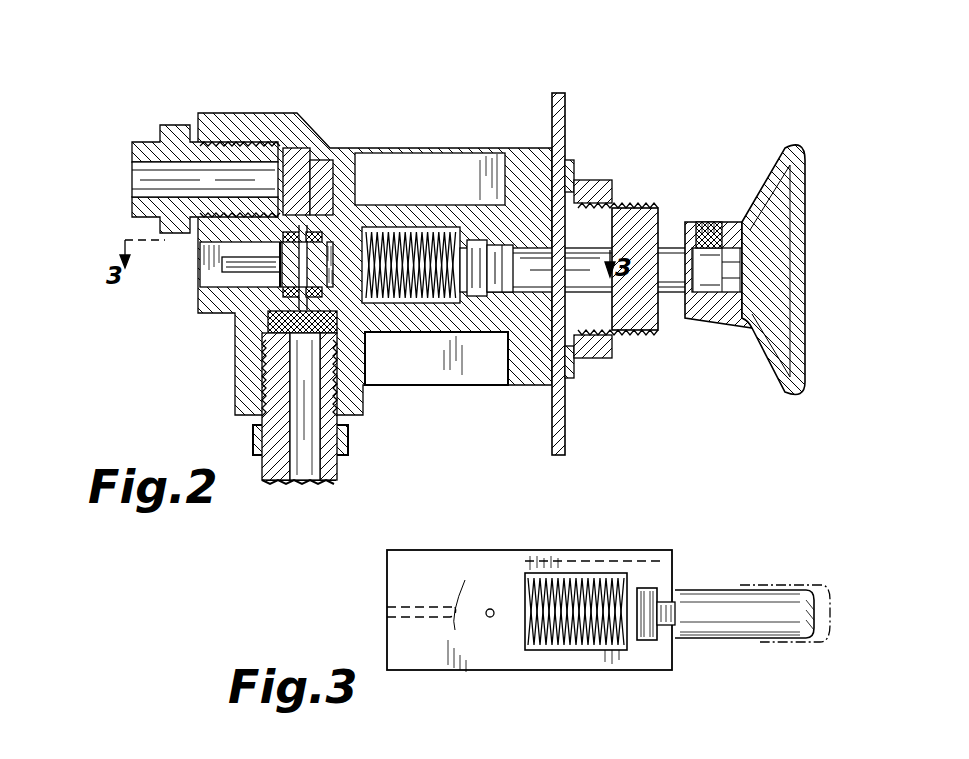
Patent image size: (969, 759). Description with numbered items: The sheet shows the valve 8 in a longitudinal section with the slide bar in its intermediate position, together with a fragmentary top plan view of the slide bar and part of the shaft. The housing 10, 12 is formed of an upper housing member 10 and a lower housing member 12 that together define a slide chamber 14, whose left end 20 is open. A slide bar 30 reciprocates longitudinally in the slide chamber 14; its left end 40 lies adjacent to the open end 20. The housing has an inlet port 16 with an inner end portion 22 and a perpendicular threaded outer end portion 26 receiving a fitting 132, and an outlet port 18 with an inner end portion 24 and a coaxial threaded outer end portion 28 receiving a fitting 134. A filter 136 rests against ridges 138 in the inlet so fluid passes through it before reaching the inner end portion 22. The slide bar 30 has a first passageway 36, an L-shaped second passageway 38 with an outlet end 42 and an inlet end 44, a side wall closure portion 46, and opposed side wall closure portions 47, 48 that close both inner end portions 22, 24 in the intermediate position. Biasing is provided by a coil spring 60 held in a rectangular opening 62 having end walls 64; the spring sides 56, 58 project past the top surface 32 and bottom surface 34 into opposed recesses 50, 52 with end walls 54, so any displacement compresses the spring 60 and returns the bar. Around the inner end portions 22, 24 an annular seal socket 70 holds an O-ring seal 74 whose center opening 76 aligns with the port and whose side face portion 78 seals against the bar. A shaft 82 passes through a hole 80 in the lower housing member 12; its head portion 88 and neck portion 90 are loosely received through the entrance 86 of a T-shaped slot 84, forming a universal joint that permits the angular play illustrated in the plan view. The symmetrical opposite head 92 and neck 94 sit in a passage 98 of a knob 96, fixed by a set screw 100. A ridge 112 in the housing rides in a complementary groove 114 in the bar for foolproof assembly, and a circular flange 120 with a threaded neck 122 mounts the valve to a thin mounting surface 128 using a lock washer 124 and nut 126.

In FIG. 2, the valve 8 is at (185, 104).
In FIG. 2, the upper housing member 10 is at (245, 147).
In FIG. 2, the lower housing member 12 is at (240, 318).
In FIG. 2, the slide chamber 14 is at (210, 275).
In FIG. 2, the inlet port 16 is at (190, 170).
In FIG. 2, the outlet port 18 is at (292, 112).
In FIG. 2, the open end of slide chamber 20 is at (175, 266).
In FIG. 2, the inner end portion of inlet port 22 is at (292, 170).
In FIG. 2, the inner end portion of outlet port 24 is at (265, 335).
In FIG. 2, the outer end portion of inlet port 26 is at (150, 190).
In FIG. 2, the outer end portion of outlet port 28 is at (298, 483).
In FIG. 2, the slide bar 30 is at (375, 165).
In FIG. 3, the slide bar 30 is at (450, 552).
In FIG. 2, the top surface of slide bar 32 is at (395, 170).
In FIG. 3, the top surface of slide bar 32 is at (490, 645).
In FIG. 2, the bottom surface of slide bar 34 is at (375, 375).
In FIG. 2, the first passageway 36 is at (365, 400).
In FIG. 3, the first passageway 36 is at (492, 608).
In FIG. 2, the second passageway 38 is at (243, 178).
In FIG. 3, the second passageway 38 is at (430, 608).
In FIG. 2, the left end of slide bar 40 is at (205, 325).
In FIG. 3, the left end of slide bar 40 is at (387, 570).
In FIG. 2, the outlet end of second passageway 42 is at (185, 300).
In FIG. 3, the outlet end of second passageway 42 is at (387, 610).
In FIG. 2, the inlet end of second passageway 44 is at (282, 342).
In FIG. 3, the inlet end of second passageway 44 is at (395, 626).
In FIG. 2, the side wall closure portion 46 is at (260, 195).
In FIG. 3, the side wall closure portion 46 is at (400, 600).
In FIG. 2, the side wall closure portion 47 is at (365, 205).
In FIG. 3, the side wall closure portion 47 is at (465, 620).
In FIG. 2, the side wall closure portion 48 is at (278, 372).
In FIG. 2, the recess 50 is at (440, 205).
In FIG. 2, the recess 52 is at (412, 365).
In FIG. 2, the end wall of recess 54 is at (425, 210).
In FIG. 2, the side of spring 56 is at (430, 240).
In FIG. 3, the side of spring 56 is at (580, 630).
In FIG. 2, the side of spring 58 is at (455, 378).
In FIG. 2, the coil spring 60 is at (432, 370).
In FIG. 2, the rectangular opening 62 is at (475, 345).
In FIG. 3, the rectangular opening 62 is at (568, 570).
In FIG. 2, the end wall of rectangular opening 64 is at (470, 205).
In FIG. 3, the end wall of rectangular opening 64 is at (540, 640).
In FIG. 2, the annular seal socket 70 is at (318, 150).
In FIG. 2, the O-ring seal 74 is at (352, 175).
In FIG. 2, the center opening of O-ring seal 76 is at (272, 380).
In FIG. 2, the side face portion of O-ring seal 78 is at (250, 305).
In FIG. 2, the hole 80 is at (612, 350).
In FIG. 2, the shaft 82 is at (640, 302).
In FIG. 3, the shaft 82 is at (745, 618).
In FIG. 2, the T-shaped slot 84 is at (495, 330).
In FIG. 3, the T-shaped slot 84 is at (652, 595).
In FIG. 2, the entrance of T-shaped slot 86 is at (500, 330).
In FIG. 3, the entrance of T-shaped slot 86 is at (668, 612).
In FIG. 2, the head portion of shaft 88 is at (480, 340).
In FIG. 3, the head portion of shaft 88 is at (645, 640).
In FIG. 2, the neck portion of shaft 90 is at (490, 338).
In FIG. 3, the neck portion of shaft 90 is at (672, 660).
In FIG. 2, the head 92 is at (728, 290).
In FIG. 2, the neck 94 is at (712, 302).
In FIG. 2, the knob 96 is at (765, 230).
In FIG. 2, the passage 98 is at (700, 295).
In FIG. 2, the set screw 100 is at (708, 222).
In FIG. 3, the ridge 112 is at (612, 558).
In FIG. 3, the groove 114 is at (640, 555).
In FIG. 2, the circular flange 120 is at (545, 160).
In FIG. 2, the threaded neck 122 is at (635, 240).
In FIG. 2, the lock washer 124 is at (575, 165).
In FIG. 2, the nut 126 is at (600, 195).
In FIG. 2, the mounting surface 128 is at (562, 120).
In FIG. 2, the fitting 132 is at (178, 128).
In FIG. 2, the fitting 134 is at (262, 440).
In FIG. 2, the filter 136 is at (285, 160).
In FIG. 2, the ridges 138 is at (338, 165).